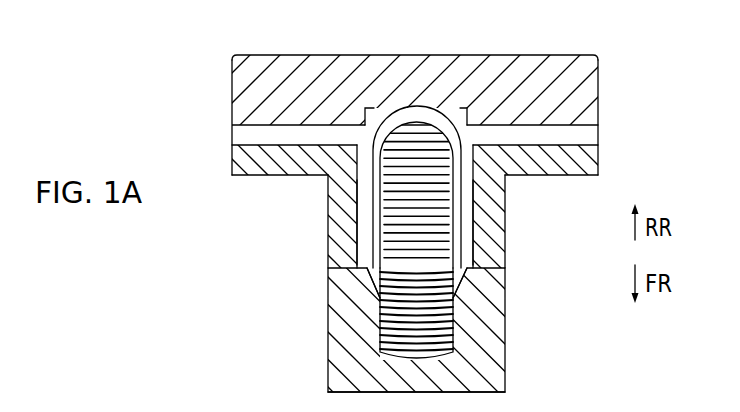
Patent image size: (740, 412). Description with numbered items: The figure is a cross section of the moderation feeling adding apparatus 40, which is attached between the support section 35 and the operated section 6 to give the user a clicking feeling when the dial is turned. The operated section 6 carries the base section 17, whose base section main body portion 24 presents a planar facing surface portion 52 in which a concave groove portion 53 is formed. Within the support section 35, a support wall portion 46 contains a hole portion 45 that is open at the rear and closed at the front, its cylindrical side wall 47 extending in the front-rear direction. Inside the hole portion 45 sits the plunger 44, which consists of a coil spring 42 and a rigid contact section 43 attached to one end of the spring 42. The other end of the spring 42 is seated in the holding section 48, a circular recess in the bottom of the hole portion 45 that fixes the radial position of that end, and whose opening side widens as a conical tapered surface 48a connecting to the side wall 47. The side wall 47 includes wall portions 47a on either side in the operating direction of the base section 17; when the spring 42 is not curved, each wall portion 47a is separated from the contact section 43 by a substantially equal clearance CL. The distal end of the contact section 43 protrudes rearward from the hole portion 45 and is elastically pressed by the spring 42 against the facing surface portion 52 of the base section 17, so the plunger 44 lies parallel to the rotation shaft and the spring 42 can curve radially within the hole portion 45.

The operated section 6 is at (528, 48).
The base section 17 is at (283, 57).
The base section main body portion 24 is at (242, 89).
The support section 35 is at (243, 162).
The moderation feeling adding apparatus 40 is at (608, 76).
The spring 42 is at (456, 345).
The contact section 43 is at (410, 108).
The plunger 44 is at (386, 118).
The hole portion 45 is at (362, 268).
The support wall portion 46 is at (506, 387).
The side wall 47 is at (327, 171).
The wall portion 47a is at (342, 203).
The holding section 48 is at (338, 325).
The tapered surface 48a is at (470, 270).
The facing surface portion 52 is at (597, 127).
The concave groove portion 53 is at (465, 108).
The clearance CL is at (365, 236).